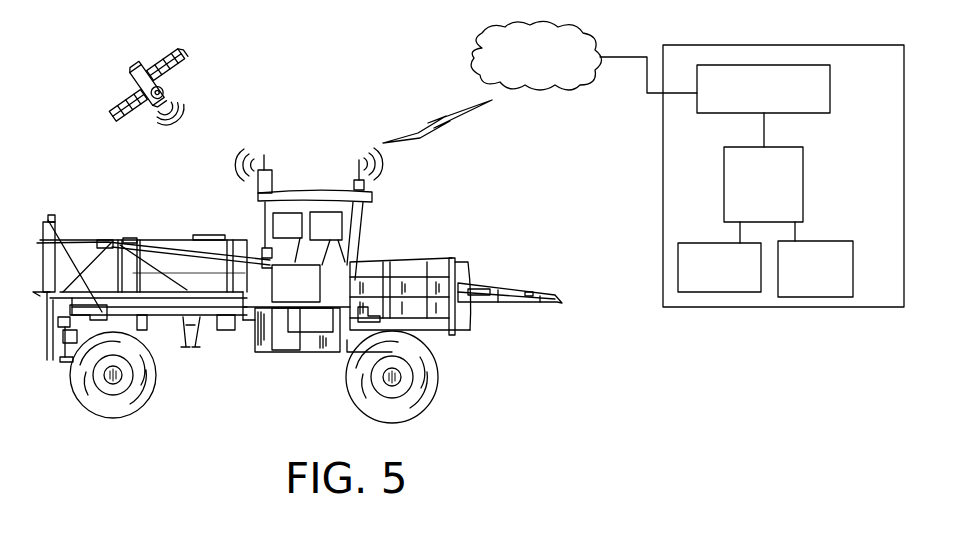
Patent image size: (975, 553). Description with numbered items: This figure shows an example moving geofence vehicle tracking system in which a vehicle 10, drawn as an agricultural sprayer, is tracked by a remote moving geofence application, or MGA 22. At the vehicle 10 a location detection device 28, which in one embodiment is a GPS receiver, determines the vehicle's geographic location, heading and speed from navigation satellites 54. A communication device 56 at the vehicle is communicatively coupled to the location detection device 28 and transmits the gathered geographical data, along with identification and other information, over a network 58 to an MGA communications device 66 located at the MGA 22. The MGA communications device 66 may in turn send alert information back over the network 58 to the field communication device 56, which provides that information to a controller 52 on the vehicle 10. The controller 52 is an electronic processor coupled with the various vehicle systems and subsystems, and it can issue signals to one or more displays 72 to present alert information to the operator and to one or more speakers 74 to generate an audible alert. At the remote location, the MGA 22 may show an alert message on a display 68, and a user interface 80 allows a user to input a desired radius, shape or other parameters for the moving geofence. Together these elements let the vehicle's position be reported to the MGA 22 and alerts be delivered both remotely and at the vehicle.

The vehicle 10 is at (292, 351).
The MGA 22 is at (776, 174).
The location detection device 28 is at (268, 172).
The controller 52 is at (308, 293).
The navigation satellite 54 is at (187, 67).
The communication device 56 is at (353, 180).
The network 58 is at (543, 73).
The MGA communications device 66 is at (826, 86).
The display 68 is at (756, 268).
The display 72 is at (300, 236).
The speaker 74 is at (338, 236).
The user interface 80 is at (844, 265).